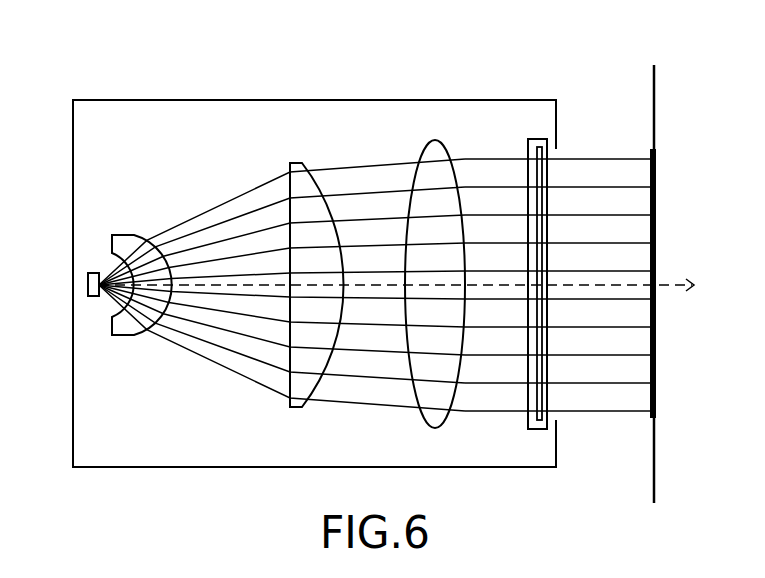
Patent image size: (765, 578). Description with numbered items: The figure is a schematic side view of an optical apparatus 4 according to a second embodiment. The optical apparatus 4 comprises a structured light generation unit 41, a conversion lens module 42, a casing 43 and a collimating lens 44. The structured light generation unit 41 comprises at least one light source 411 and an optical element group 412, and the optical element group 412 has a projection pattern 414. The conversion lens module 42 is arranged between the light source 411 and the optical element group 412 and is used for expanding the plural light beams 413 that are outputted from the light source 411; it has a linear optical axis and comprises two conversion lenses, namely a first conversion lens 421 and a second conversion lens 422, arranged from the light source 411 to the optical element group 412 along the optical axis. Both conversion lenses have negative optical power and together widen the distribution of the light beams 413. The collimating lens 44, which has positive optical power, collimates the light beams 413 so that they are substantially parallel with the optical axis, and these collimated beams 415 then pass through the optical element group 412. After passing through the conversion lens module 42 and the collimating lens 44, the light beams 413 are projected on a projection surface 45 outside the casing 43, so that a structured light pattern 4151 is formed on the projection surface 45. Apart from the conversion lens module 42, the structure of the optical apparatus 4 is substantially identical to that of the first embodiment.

The optical apparatus 4 is at (110, 46).
The structured light generation unit 41 is at (289, 6).
The light source 411 is at (90, 272).
The optical element group 412 is at (533, 150).
The conversion lens module 42 is at (409, 6).
The first conversion lens 421 is at (122, 240).
The second conversion lens 422 is at (297, 163).
The casing 43 is at (222, 112).
The collimating lens 44 is at (428, 157).
The projection surface 45 is at (654, 100).
The light beams 413 is at (200, 343).
The projection pattern 414 is at (535, 400).
The parallel light beam 415 is at (603, 157).
The structured light pattern 4151 is at (650, 415).